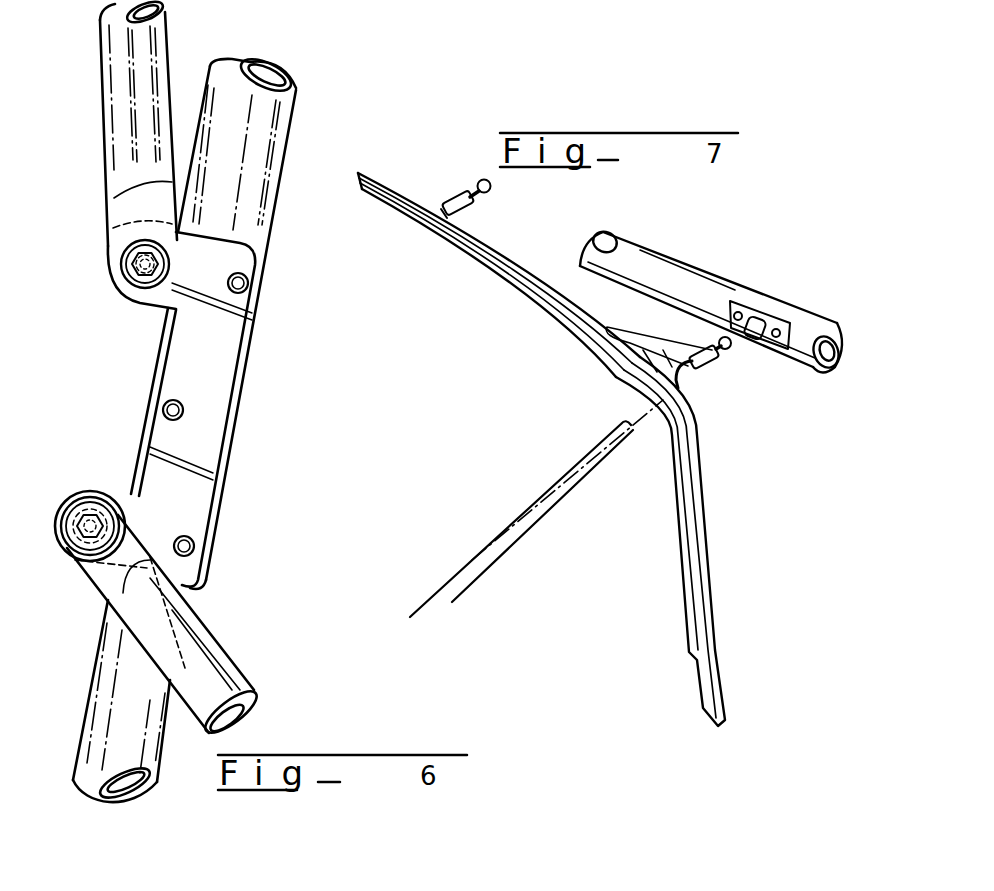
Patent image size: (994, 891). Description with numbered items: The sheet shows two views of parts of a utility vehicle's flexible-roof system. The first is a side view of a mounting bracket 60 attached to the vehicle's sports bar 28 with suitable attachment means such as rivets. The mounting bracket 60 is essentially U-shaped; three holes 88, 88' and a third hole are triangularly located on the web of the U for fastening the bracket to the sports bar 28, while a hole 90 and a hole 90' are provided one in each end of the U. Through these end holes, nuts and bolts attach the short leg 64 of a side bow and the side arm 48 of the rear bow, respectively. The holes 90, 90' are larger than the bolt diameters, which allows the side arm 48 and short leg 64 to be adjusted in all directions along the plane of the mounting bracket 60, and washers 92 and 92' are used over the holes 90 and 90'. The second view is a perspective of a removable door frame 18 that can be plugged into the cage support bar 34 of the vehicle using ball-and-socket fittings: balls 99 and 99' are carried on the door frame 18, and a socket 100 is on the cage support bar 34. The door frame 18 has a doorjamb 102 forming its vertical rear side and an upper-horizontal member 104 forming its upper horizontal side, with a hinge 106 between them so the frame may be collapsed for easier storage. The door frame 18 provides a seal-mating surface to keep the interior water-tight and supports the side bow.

In FIG. 6, the short leg 64 is at (120, 147).
In FIG. 6, the sports bar 28 is at (290, 120).
In FIG. 6, the mounting bracket 60 is at (210, 432).
In FIG. 6, the hole 88 is at (278, 284).
In FIG. 6, the hole 88' is at (234, 379).
In FIG. 6, the washer 92 is at (104, 264).
In FIG. 6, the hole 90 is at (100, 285).
In FIG. 6, the washer 92' is at (82, 494).
In FIG. 6, the hole 90' is at (62, 569).
In FIG. 6, the side arm 48 is at (227, 643).
In FIG. 7, the upper-horizontal member 104 is at (508, 263).
In FIG. 7, the door frame 18 is at (698, 457).
In FIG. 7, the doorjamb 102 is at (700, 507).
In FIG. 7, the ball 99' is at (503, 199).
In FIG. 7, the cage support bar 34 is at (683, 273).
In FIG. 7, the socket 100 is at (757, 343).
In FIG. 7, the ball 99 is at (719, 370).
In FIG. 7, the hinge 106 is at (655, 378).